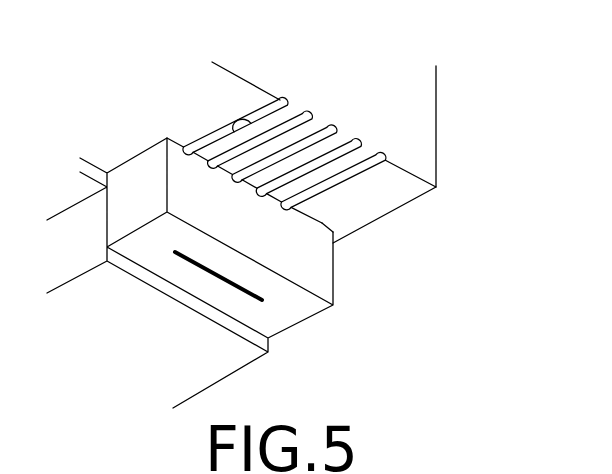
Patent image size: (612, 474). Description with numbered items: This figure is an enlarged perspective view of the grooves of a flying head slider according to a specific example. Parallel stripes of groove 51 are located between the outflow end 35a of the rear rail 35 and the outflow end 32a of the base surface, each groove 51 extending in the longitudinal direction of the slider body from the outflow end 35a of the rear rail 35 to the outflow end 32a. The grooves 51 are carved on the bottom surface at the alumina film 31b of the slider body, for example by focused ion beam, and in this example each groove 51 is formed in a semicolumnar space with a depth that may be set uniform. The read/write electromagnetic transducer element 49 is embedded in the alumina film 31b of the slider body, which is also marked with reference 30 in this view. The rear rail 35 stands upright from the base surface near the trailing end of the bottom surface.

The outflow end of the base surface 32a is at (237, 78).
The groove 51 is at (233, 131).
The alumina film 31b is at (422, 193).
The outflow end of the rear rail 35a is at (334, 244).
The rear rail 35 is at (334, 297).
The read/write electromagnetic transducer element 49 is at (228, 281).
The connector housing 30 is at (478, 467).